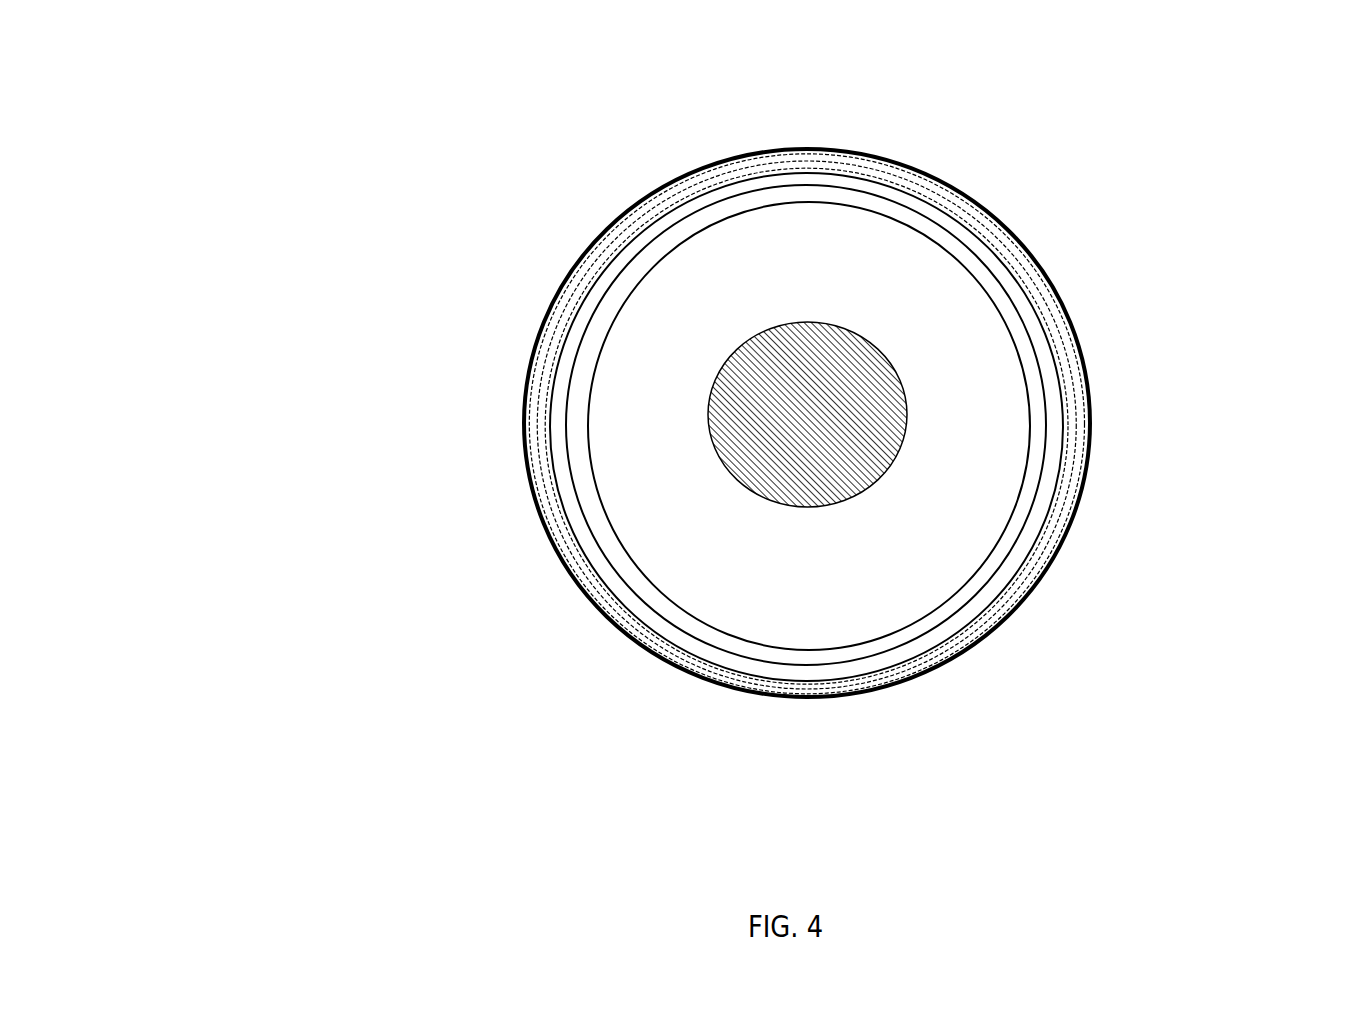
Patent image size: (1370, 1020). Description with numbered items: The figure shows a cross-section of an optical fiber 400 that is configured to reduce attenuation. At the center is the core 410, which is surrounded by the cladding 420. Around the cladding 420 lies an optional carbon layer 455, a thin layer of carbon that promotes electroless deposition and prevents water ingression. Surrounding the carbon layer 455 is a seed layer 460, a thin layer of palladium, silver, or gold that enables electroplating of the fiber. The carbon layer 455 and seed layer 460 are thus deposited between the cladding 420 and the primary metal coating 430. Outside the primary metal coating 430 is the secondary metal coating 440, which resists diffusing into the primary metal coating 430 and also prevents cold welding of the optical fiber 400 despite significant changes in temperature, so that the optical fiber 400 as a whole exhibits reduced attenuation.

The optical fiber 400 is at (440, 226).
The core 410 is at (880, 468).
The cladding 420 is at (733, 553).
The primary metal coating 430 is at (533, 498).
The secondary metal coating 440 is at (965, 657).
The carbon layer 455 is at (910, 223).
The seed layer 460 is at (1033, 318).